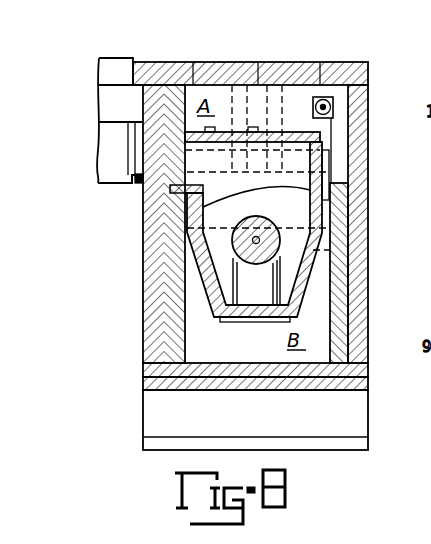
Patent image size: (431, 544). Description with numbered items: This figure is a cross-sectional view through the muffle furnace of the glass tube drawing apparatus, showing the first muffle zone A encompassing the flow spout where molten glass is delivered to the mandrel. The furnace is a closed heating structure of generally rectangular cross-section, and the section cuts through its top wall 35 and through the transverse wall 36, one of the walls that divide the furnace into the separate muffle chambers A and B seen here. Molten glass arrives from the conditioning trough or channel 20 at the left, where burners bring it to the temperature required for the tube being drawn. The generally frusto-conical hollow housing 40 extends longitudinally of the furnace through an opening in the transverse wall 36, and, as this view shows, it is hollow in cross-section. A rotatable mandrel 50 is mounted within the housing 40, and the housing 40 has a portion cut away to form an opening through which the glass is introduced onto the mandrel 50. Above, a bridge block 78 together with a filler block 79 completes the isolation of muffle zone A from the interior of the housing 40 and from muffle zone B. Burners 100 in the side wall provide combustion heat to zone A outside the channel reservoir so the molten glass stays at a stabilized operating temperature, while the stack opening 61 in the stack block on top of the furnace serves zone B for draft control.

The conditioning trough or channel 20 is at (112, 176).
The top wall 35 is at (345, 63).
The transverse wall 36 is at (197, 322).
The frusto-conical hollow housing 40 is at (231, 241).
The mandrel 50 is at (231, 243).
The stack opening 61 is at (251, 103).
The bridge block 78 is at (289, 131).
The filler block 79 is at (323, 205).
The burners 100 is at (333, 104).